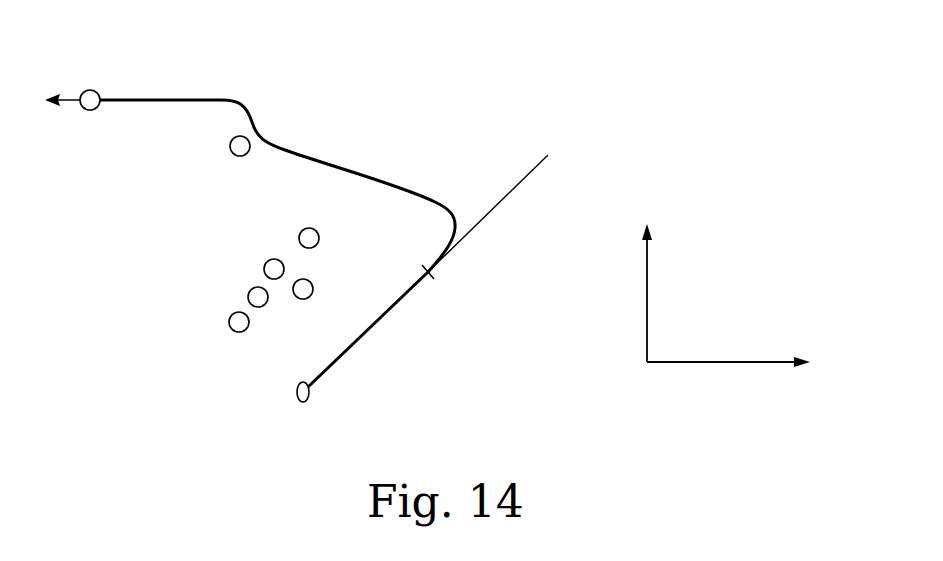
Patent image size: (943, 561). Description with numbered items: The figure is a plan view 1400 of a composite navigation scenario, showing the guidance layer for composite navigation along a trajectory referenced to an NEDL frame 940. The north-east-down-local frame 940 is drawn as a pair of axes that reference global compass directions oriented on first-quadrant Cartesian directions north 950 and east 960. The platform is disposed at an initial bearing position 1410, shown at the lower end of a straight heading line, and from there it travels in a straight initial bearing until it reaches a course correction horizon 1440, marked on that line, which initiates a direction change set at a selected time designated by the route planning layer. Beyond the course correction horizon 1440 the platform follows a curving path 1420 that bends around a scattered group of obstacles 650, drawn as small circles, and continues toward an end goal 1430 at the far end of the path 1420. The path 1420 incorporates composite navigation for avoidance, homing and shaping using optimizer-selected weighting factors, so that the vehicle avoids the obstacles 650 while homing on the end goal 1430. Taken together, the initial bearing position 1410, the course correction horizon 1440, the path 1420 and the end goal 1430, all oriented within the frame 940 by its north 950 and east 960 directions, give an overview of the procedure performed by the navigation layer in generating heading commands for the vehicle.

The plan view 1400 is at (742, 51).
The initial bearing position 1410 is at (310, 394).
The path 1420 is at (353, 176).
The end goal 1430 is at (95, 91).
The course correction horizon 1440 is at (434, 276).
The obstacles 650 is at (263, 266).
The north-east-down-local (NEDL) frame 940 is at (782, 272).
The north 950 is at (656, 293).
The east 960 is at (728, 375).